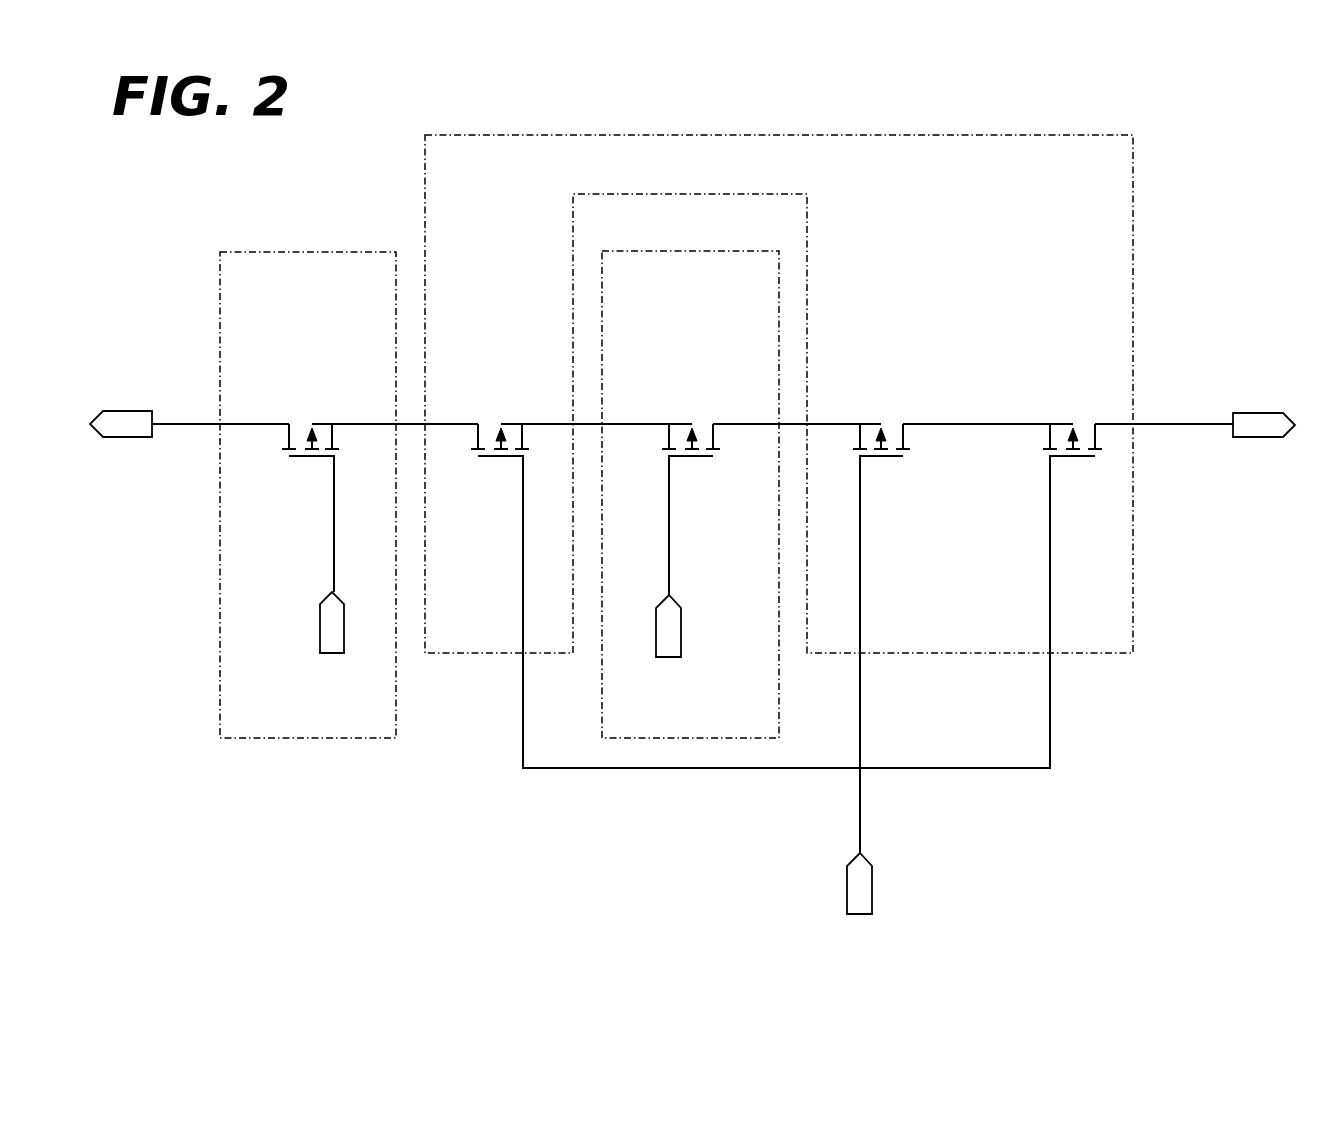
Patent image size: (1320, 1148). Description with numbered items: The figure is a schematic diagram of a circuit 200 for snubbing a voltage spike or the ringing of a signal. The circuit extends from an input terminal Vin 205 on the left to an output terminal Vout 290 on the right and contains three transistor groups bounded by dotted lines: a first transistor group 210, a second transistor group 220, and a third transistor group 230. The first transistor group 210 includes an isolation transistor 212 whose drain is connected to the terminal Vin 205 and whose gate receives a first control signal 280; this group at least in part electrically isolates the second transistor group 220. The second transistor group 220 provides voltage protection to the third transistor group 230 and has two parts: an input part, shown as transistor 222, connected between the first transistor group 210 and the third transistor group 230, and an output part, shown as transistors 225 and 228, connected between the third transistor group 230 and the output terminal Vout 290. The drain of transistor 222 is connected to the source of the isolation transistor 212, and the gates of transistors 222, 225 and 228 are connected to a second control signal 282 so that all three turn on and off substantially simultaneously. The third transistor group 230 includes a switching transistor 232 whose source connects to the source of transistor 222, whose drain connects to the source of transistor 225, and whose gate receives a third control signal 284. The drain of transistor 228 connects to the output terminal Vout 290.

The circuit 200 is at (696, 501).
The terminal Vin 205 is at (115, 428).
The output terminal Vout 290 is at (1274, 430).
The first transistor group 210 is at (308, 495).
The second transistor group 220 is at (779, 394).
The third transistor group 230 is at (690, 494).
The isolation transistor 212 is at (334, 494).
The transistor 222 is at (760, 582).
The switching transistor 232 is at (717, 495).
The transistor 225 is at (906, 624).
The transistor 228 is at (1082, 433).
The first control signal In-1 280 is at (308, 628).
The second control signal In-2 282 is at (883, 884).
The third control signal In-3 284 is at (694, 628).